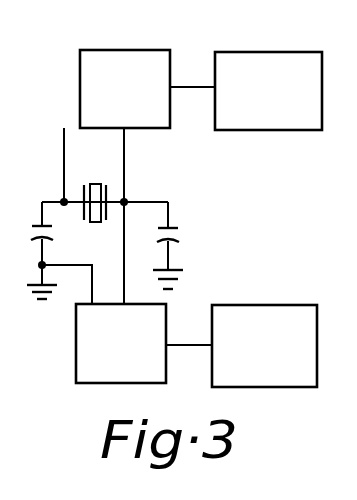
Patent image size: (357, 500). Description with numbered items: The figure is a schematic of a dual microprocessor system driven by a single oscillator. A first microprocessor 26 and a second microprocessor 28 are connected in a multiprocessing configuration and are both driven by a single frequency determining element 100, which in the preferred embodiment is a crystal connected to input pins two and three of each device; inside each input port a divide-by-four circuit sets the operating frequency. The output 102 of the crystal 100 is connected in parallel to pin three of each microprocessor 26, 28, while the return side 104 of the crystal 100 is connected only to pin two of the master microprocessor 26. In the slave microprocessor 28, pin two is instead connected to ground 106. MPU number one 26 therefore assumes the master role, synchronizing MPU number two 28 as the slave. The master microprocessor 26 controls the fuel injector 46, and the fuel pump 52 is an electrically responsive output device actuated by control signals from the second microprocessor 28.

The first microprocessor 26 is at (120, 50).
The second microprocessor 28 is at (96, 384).
The injector 46 is at (295, 15).
The fuel pump 52 is at (301, 262).
The frequency determining element 100 is at (108, 150).
The output of the crystal 102 is at (132, 200).
The return side of the crystal 104 is at (64, 138).
The ground 106 is at (46, 302).